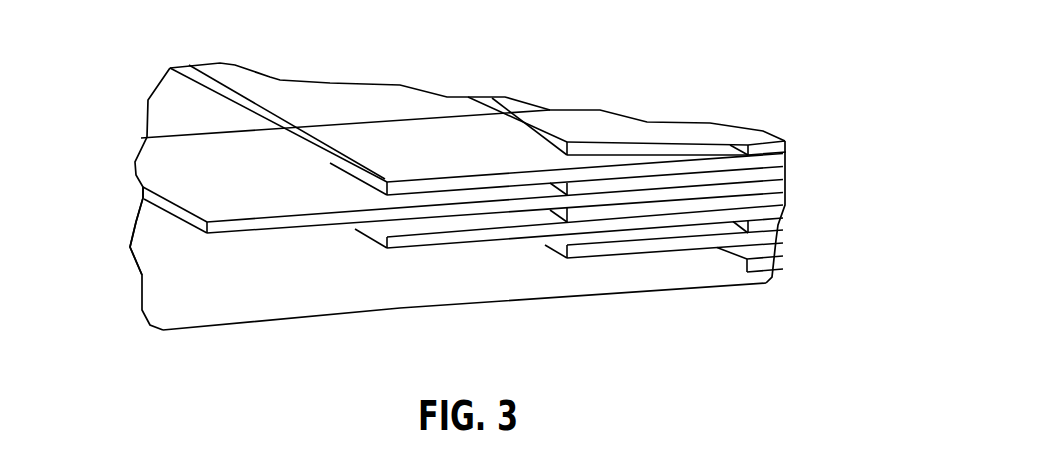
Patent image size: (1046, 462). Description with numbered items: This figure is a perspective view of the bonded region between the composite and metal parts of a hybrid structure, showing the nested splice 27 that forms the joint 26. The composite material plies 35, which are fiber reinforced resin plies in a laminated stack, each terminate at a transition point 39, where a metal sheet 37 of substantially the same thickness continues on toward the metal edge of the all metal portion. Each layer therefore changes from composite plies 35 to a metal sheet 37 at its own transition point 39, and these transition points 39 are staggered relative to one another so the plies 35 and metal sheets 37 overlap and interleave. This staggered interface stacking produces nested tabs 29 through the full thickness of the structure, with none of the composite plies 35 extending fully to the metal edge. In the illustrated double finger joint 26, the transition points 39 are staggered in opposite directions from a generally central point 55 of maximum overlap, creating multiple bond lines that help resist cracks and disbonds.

The joint 26 is at (612, 309).
The nested splice 27 is at (435, 305).
The nested tabs 29 is at (427, 181).
The composite material plies 35 is at (148, 240).
The metal sheet 37 is at (730, 163).
The transition point 39 is at (536, 250).
The central point 55 is at (196, 232).